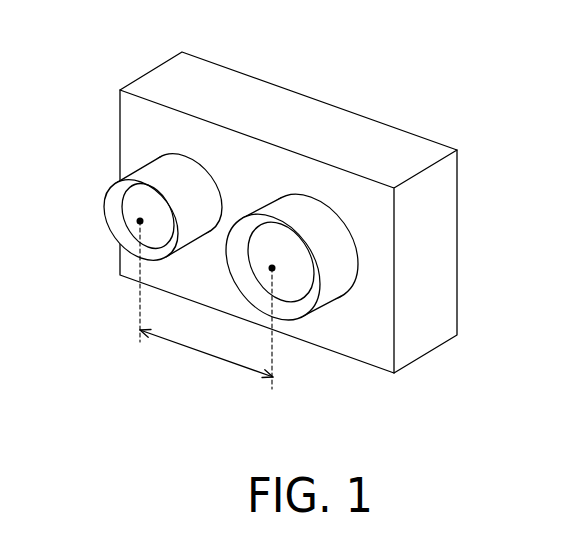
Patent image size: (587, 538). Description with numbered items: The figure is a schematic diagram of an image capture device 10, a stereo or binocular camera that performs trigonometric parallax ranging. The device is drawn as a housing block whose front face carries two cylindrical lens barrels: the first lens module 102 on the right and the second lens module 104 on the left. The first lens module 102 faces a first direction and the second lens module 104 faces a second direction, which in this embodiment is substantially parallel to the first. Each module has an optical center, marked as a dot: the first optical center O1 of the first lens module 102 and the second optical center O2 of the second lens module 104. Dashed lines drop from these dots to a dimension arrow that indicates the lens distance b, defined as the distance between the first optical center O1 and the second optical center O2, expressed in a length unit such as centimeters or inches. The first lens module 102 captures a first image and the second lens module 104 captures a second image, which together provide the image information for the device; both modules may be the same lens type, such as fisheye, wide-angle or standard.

The image capture device 10 is at (442, 63).
The first lens module 102 is at (338, 243).
The second lens module 104 is at (150, 169).
The first optical center O1 is at (272, 268).
The second optical center O2 is at (140, 221).
The lens distance b is at (206, 353).